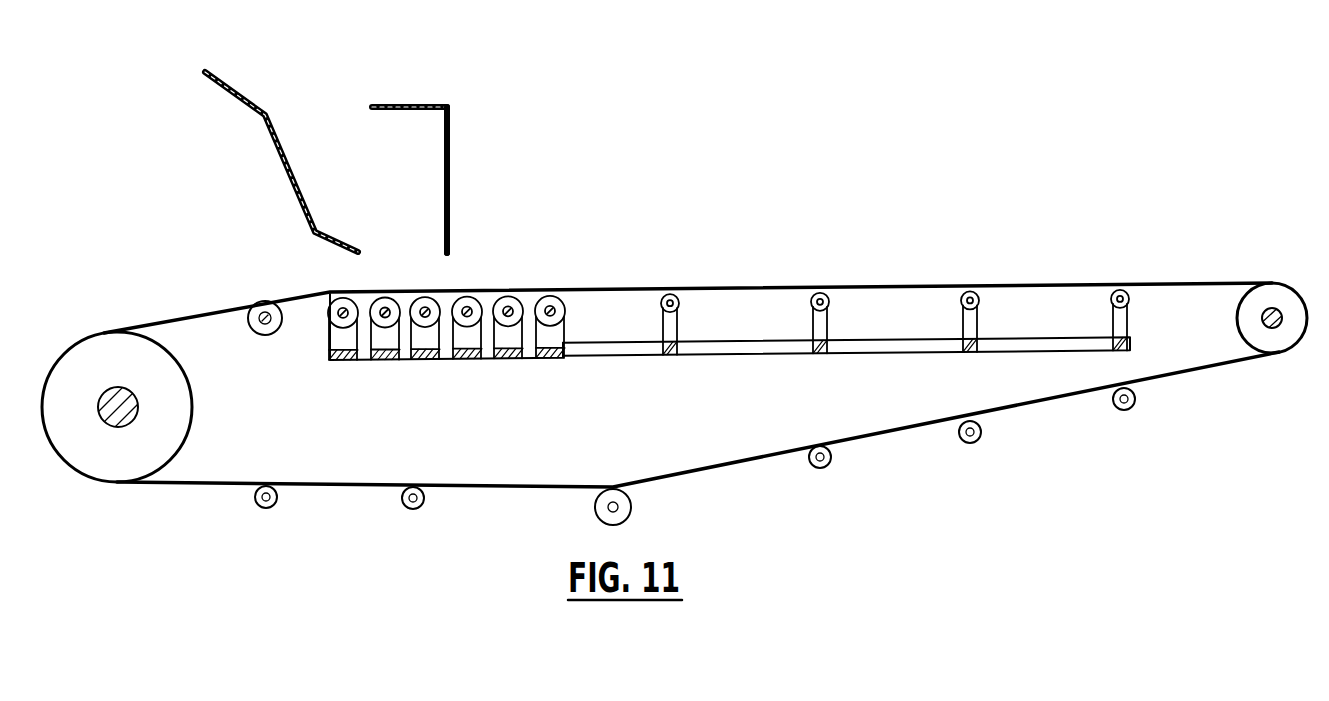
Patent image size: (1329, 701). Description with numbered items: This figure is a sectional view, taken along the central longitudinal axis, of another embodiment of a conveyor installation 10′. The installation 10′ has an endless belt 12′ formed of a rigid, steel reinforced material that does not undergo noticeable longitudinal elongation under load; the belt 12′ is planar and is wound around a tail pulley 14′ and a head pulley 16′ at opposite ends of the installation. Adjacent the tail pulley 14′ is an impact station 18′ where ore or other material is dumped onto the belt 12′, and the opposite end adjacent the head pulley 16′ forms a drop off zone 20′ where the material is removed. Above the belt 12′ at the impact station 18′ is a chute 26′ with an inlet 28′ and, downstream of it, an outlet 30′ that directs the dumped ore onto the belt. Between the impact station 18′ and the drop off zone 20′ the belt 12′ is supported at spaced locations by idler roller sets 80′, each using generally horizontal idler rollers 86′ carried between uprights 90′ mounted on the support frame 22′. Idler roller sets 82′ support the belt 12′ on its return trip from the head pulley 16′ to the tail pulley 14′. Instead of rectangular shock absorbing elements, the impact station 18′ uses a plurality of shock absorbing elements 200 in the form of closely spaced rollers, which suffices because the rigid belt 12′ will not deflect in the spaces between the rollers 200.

The conveyor installation 10′ is at (942, 123).
The belt 12′ is at (780, 288).
The tail pulley 14′ is at (118, 458).
The head pulley 16′ is at (1276, 340).
The impact station 18′ is at (594, 203).
The drop off zone 20′ is at (1167, 240).
The support frame 22′ is at (713, 350).
The chute 26′ is at (434, 91).
The inlet 28′ is at (308, 113).
The outlet 30′ is at (417, 212).
The idler roller set 80′ is at (645, 332).
The idler roller set 82′ is at (405, 506).
The idler rollers 86′ is at (662, 303).
The uprights 90′ is at (684, 327).
The shock absorbing elements 200 is at (333, 318).